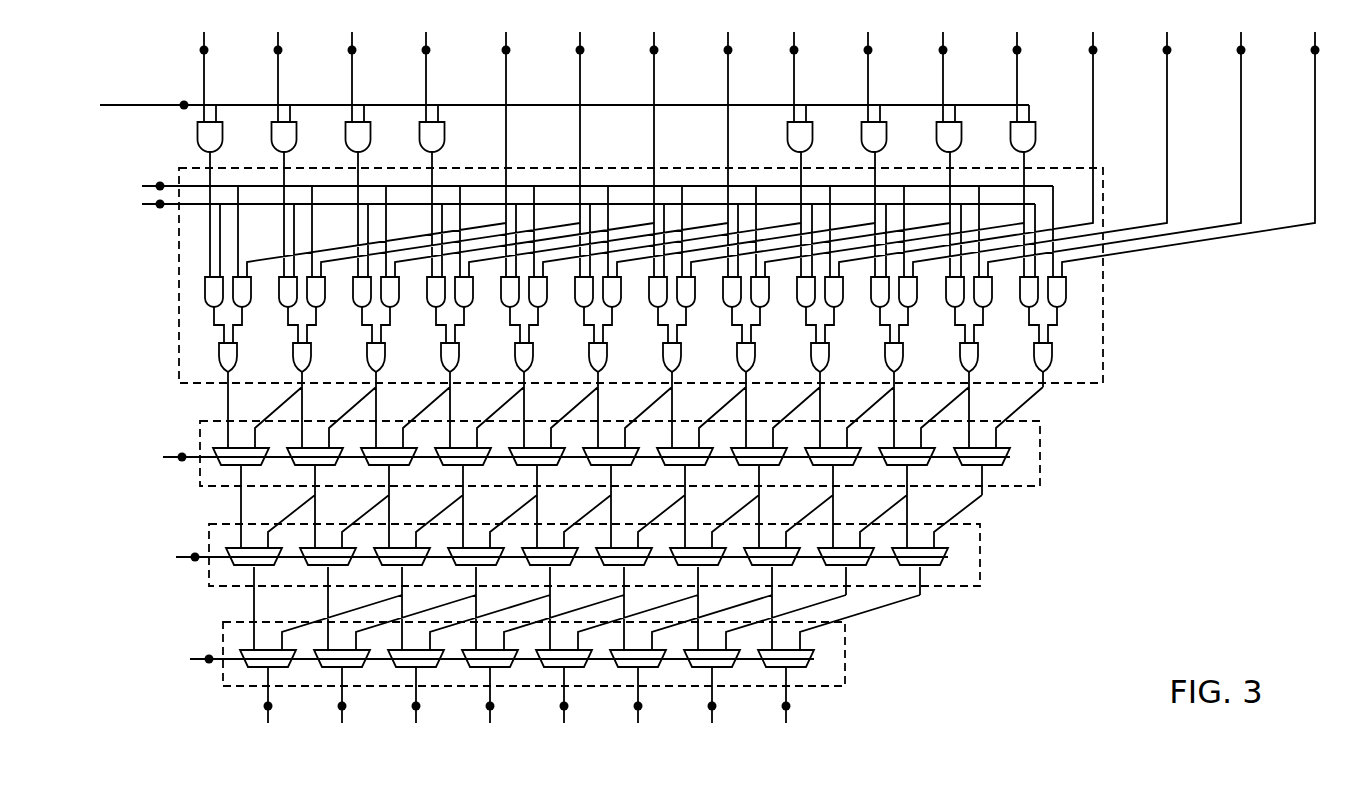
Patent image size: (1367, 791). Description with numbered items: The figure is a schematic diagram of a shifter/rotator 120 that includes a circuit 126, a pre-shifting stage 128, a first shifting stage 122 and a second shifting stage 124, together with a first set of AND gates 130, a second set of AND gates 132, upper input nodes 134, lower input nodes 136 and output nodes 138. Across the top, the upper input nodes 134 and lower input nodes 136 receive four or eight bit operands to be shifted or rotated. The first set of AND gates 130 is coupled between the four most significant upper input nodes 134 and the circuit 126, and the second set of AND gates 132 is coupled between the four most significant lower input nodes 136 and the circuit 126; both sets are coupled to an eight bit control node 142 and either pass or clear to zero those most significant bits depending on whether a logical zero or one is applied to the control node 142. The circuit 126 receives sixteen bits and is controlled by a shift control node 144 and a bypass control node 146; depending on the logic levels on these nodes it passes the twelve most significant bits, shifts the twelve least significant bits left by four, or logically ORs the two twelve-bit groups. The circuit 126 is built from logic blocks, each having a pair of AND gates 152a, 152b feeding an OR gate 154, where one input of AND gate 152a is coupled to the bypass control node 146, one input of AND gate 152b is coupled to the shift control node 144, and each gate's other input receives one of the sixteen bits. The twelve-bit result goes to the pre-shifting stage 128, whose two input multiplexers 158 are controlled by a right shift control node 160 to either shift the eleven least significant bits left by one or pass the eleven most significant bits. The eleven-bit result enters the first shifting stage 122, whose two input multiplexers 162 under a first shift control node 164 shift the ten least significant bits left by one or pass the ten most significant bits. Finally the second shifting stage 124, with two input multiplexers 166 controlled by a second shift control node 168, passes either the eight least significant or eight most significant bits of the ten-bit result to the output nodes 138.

The shifter/rotator 120 is at (1201, 537).
The first shifting stage 122 is at (981, 541).
The second shifting stage 124 is at (846, 641).
The circuit 126 is at (1104, 280).
The pre-shifting stage 128 is at (1041, 441).
The first set of AND gates 130 is at (454, 148).
The second set of AND gates 132 is at (1045, 148).
The upper input nodes 134 is at (744, 38).
The lower input nodes 136 is at (1331, 38).
The output nodes 138 is at (801, 721).
The control node 142 is at (178, 103).
The shift control node 144 is at (152, 184).
The bypass control node 146 is at (152, 205).
The AND gate 152a is at (1023, 308).
The AND gate 152b is at (1062, 309).
The OR gate 154 is at (1050, 369).
The two input multiplexers 158 is at (1008, 478).
The right shift control node 160 is at (177, 460).
The two input multiplexers 162 is at (946, 579).
The first shift control node 164 is at (189, 560).
The two input multiplexers 166 is at (812, 681).
The second shift control node 168 is at (203, 661).